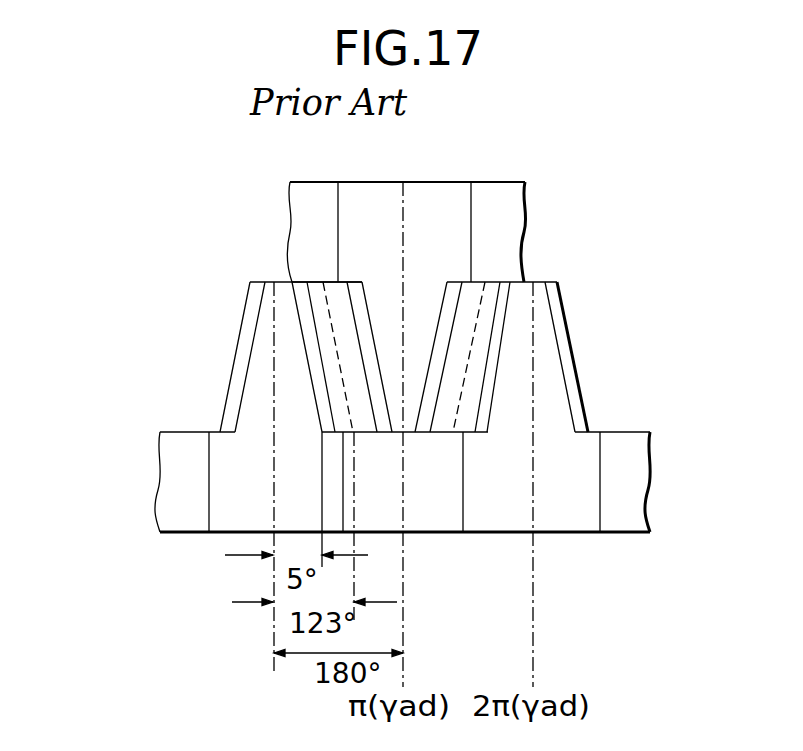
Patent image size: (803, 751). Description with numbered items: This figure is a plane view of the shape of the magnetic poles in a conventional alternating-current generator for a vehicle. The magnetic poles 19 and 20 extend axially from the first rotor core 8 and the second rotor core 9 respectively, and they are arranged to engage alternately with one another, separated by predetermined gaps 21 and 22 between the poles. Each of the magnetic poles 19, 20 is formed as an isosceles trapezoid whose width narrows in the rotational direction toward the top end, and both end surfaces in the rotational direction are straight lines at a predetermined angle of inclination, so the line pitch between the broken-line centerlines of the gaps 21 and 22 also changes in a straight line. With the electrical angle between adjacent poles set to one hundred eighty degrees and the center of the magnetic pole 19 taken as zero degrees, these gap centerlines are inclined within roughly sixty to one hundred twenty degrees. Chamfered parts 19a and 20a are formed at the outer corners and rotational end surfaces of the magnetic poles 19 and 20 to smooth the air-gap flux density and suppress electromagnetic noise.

The first rotor core 8 is at (566, 503).
The second rotor core 9 is at (440, 202).
The magnetic pole 19 is at (265, 352).
The chamfered part 19a is at (587, 387).
The magnetic pole 20 is at (415, 310).
The chamfered part 20a is at (442, 334).
The gap 21 is at (349, 314).
The gap 22 is at (468, 402).